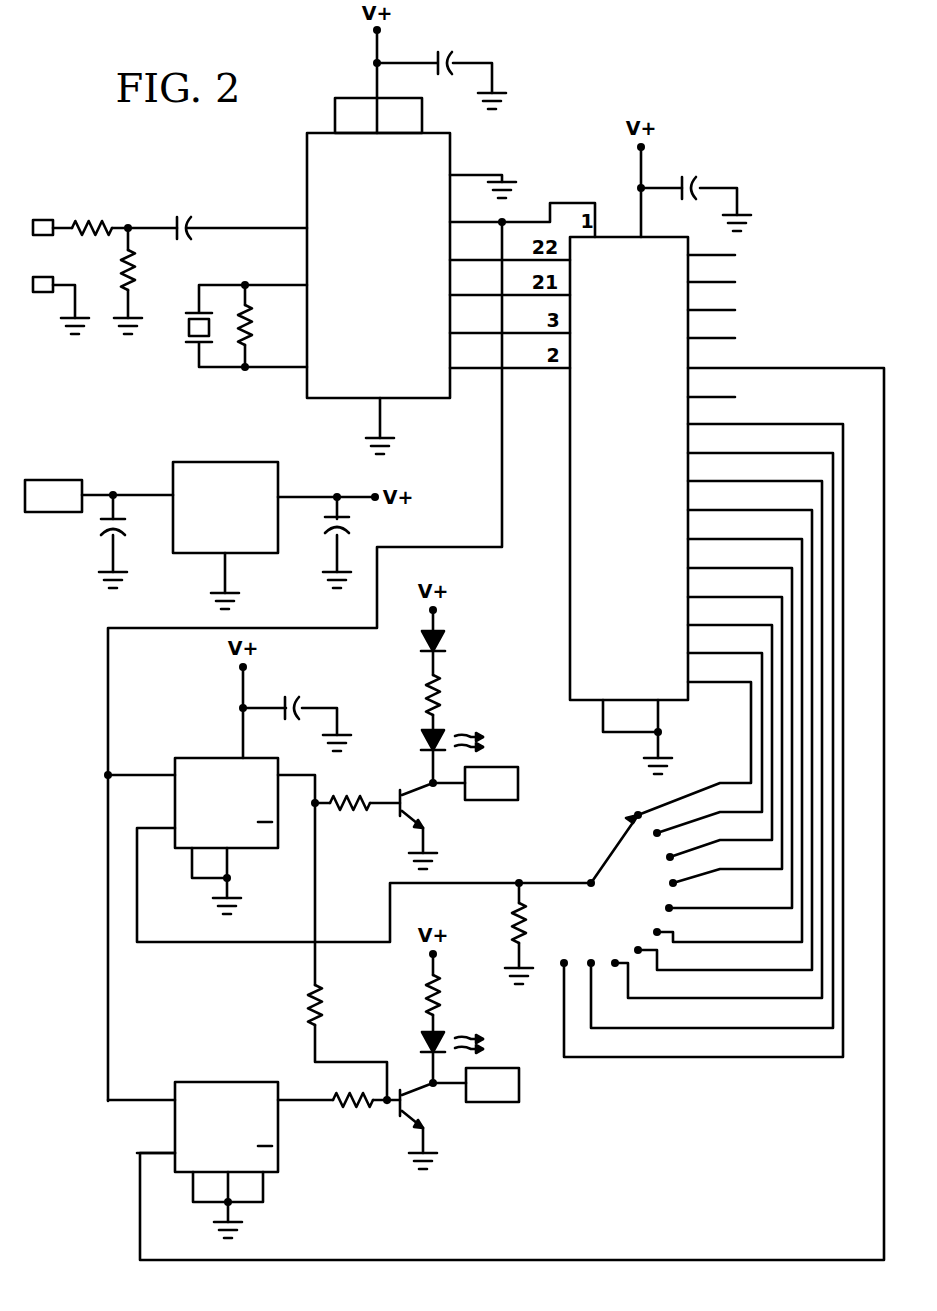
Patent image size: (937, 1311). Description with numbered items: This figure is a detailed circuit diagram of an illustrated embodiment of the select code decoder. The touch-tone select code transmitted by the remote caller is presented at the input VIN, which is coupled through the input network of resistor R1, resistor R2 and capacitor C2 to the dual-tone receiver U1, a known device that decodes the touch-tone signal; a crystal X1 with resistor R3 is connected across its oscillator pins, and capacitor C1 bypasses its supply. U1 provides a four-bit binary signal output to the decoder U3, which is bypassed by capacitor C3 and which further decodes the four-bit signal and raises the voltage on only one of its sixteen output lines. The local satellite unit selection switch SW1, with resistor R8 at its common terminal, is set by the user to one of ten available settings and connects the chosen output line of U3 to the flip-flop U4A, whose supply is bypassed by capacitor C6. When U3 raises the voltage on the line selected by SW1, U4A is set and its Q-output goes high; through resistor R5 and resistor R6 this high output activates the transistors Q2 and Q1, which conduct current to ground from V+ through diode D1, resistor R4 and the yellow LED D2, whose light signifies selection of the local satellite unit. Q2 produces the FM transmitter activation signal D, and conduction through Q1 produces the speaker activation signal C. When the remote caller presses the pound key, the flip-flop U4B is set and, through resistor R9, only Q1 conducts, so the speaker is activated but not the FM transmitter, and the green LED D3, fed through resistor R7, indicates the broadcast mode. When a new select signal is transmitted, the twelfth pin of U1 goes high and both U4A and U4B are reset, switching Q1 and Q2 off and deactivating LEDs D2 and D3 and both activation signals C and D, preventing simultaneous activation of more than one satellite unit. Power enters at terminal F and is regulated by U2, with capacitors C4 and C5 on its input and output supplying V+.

The dual-tone receiver U1 is at (379, 276).
The voltage regulator U2 is at (225, 535).
The decoder U3 is at (652, 493).
The flip-flop U4A is at (349, 804).
The flip-flop U4B is at (220, 1156).
The input resistor R1 is at (90, 215).
The input shunt resistor R2 is at (140, 281).
The crystal feedback resistor R3 is at (260, 326).
The LED current limiting resistor R4 is at (451, 702).
The base resistor of Q2 R5 is at (357, 791).
The coupling resistor R6 is at (347, 953).
The LED current limiting resistor R7 is at (451, 993).
The switch pull-down resistor R8 is at (533, 933).
The base resistor of Q1 R9 is at (366, 1088).
The supply bypass capacitor C1 is at (441, 67).
The input coupling capacitor C2 is at (217, 213).
The supply bypass capacitor C3 is at (696, 189).
The regulator input capacitor C4 is at (130, 541).
The regulator output capacitor C5 is at (325, 542).
The supply bypass capacitor C6 is at (297, 711).
The diode D1 is at (416, 642).
The yellow LED D2 is at (456, 756).
The green LED D3 is at (460, 1057).
The transistor Q1 is at (425, 1126).
The transistor Q2 is at (425, 826).
The crystal X1 is at (199, 326).
The local satellite unit selection switch SW1 is at (512, 814).
The touch-tone select code input VIN is at (52, 277).
The power input terminal F is at (53, 496).
The FM transmitter activation signal D is at (475, 783).
The speaker activation signal C is at (476, 1085).